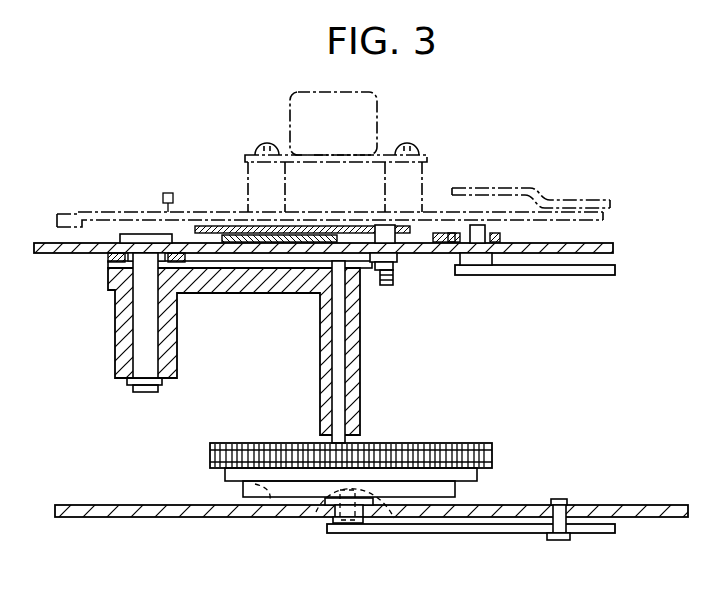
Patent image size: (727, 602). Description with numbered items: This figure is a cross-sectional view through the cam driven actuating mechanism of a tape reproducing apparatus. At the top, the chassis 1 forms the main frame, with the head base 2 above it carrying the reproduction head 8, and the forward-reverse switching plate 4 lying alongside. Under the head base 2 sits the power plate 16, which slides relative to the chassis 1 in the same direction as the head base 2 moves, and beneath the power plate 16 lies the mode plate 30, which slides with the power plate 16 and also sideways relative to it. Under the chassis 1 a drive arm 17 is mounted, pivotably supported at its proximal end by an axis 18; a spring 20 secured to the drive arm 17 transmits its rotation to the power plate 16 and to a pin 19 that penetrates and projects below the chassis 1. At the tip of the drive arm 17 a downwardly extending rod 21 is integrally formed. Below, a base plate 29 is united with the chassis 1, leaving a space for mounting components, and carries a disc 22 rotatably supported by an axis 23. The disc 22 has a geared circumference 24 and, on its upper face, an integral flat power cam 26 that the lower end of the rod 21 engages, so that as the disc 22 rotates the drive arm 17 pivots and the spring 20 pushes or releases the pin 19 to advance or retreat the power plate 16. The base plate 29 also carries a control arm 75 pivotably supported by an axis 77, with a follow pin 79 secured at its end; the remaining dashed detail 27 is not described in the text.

The chassis 1 is at (600, 243).
The head base 2 is at (185, 212).
The forward-reverse switching plate 4 is at (507, 187).
The reproduction head 8 is at (384, 130).
The power plate 16 is at (322, 226).
The drive arm 17 is at (243, 288).
The axis 18 is at (140, 333).
The pin 19 is at (400, 270).
The spring 20 is at (372, 270).
The rod 21 is at (322, 362).
The disc 22 is at (493, 458).
The axis 23 is at (323, 500).
The geared circumference 24 is at (212, 453).
The power cam 26 is at (450, 456).
The hole 27 is at (268, 500).
The base plate 29 is at (598, 505).
The mode plate 30 is at (230, 236).
The control arm 75 is at (462, 533).
The axis 77 is at (555, 540).
The follow pin 79 is at (383, 510).